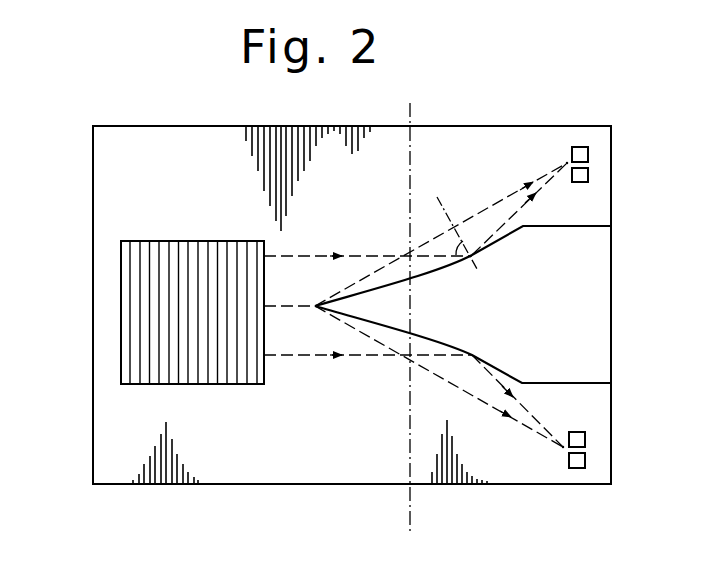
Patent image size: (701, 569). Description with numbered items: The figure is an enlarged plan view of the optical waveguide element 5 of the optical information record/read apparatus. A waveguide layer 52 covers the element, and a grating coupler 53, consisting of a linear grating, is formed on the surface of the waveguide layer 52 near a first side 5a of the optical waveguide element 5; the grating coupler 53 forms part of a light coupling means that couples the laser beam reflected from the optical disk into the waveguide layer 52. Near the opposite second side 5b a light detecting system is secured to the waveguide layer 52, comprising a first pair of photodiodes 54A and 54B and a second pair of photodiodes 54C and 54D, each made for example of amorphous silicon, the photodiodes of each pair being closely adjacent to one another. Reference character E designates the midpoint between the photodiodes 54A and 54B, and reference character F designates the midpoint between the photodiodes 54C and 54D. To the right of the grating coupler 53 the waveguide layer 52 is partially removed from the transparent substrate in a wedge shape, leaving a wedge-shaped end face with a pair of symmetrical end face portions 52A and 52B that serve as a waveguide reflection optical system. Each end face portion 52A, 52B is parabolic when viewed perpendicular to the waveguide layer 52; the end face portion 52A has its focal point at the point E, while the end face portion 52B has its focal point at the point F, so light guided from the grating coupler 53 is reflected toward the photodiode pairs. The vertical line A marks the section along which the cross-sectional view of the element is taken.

The optical waveguide element 5 is at (74, 186).
The first side 5a is at (93, 311).
The second side 5b is at (611, 306).
The waveguide layer 52 is at (151, 133).
The end face portion 52A is at (452, 271).
The end face portion 52B is at (460, 348).
The grating coupler 53 is at (193, 248).
The photodiode 54A is at (588, 152).
The photodiode 54B is at (588, 172).
The photodiode 54C is at (585, 437).
The photodiode 54D is at (585, 460).
The midpoint E is at (565, 160).
The midpoint F is at (563, 448).
The line A— A is at (420, 314).